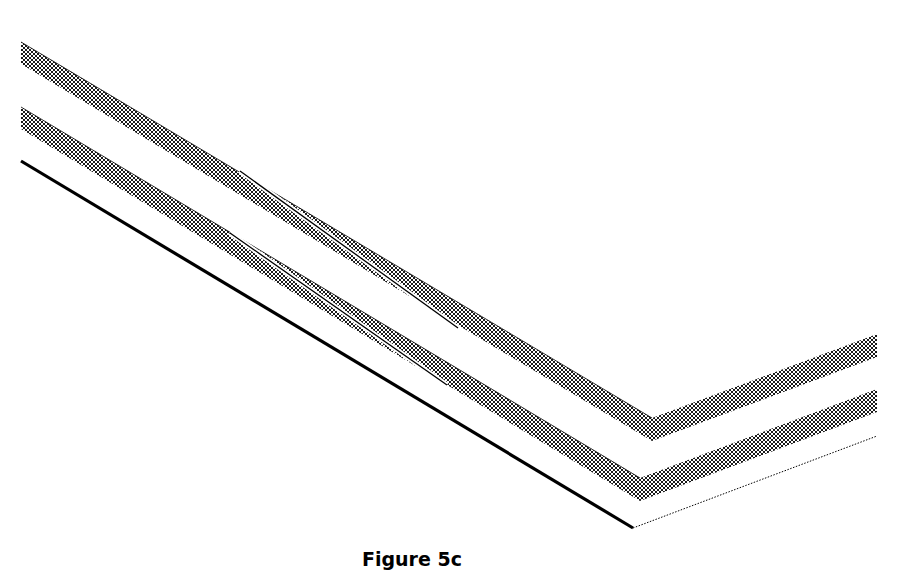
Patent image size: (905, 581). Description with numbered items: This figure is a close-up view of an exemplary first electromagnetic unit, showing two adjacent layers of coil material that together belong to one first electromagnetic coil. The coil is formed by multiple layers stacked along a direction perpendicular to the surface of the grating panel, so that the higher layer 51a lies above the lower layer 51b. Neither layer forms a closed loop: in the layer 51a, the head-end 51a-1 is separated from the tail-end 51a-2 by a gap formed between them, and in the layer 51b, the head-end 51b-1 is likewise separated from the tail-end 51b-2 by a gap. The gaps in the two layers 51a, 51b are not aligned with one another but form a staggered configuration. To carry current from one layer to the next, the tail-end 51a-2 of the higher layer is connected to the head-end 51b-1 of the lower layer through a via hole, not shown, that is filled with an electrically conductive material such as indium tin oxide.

The layer of coil material 51a is at (112, 93).
The head-end of layer 51a 51a-1 is at (178, 133).
The tail-end of layer 51a 51a-2 is at (243, 169).
The layer of coil material 51b is at (373, 249).
The head-end of layer 51b 51b-1 is at (229, 163).
The tail-end of layer 51b 51b-2 is at (298, 203).